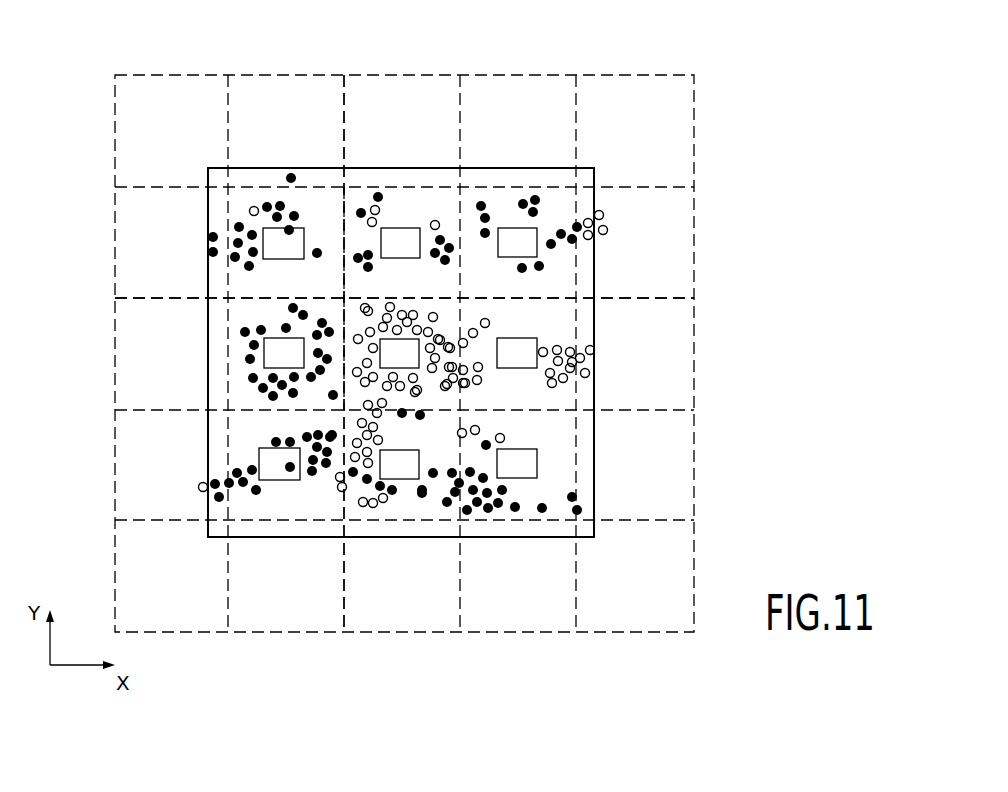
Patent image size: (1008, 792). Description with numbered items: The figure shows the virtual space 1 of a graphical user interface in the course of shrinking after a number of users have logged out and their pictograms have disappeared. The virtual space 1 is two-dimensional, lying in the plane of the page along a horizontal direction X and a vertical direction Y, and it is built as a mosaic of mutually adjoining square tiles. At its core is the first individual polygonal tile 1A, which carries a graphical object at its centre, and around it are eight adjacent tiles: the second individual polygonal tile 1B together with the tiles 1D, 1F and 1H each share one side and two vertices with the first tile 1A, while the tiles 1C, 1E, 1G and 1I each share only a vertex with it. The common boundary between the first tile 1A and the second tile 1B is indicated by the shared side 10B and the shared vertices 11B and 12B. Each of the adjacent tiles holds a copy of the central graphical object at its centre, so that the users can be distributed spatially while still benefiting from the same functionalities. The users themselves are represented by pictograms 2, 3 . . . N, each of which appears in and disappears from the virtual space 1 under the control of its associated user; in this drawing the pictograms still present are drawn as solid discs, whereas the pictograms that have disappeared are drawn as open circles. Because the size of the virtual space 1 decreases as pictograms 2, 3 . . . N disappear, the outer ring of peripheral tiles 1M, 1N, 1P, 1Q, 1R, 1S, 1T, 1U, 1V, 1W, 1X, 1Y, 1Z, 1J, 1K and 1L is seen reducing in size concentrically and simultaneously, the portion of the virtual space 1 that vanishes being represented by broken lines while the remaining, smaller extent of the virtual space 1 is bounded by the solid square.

The virtual space 1 is at (534, 162).
The pictogram 2 is at (542, 513).
The pictogram 3 is at (538, 199).
The pictogram N is at (218, 232).
The side 10B is at (362, 305).
The vertex 11B is at (343, 299).
The vertex 12B is at (460, 298).
The first individual polygonal tile 1A is at (449, 325).
The second individual polygonal tile 1B is at (417, 203).
The adjacent tile 1C is at (307, 203).
The adjacent tile 1D is at (247, 322).
The adjacent tile 1E is at (247, 435).
The adjacent tile 1F is at (405, 508).
The adjacent tile 1G is at (560, 468).
The adjacent tile 1H is at (563, 395).
The adjacent tile 1I is at (560, 273).
The peripheral tile 1J is at (487, 177).
The peripheral tile 1K is at (365, 178).
The peripheral tile 1L is at (257, 177).
The peripheral tile 1M is at (215, 178).
The peripheral tile 1N is at (218, 213).
The peripheral tile 1P is at (218, 310).
The peripheral tile 1Q is at (218, 422).
The peripheral tile 1R is at (218, 530).
The peripheral tile 1S is at (287, 527).
The peripheral tile 1T is at (427, 527).
The peripheral tile 1U is at (557, 530).
The peripheral tile 1V is at (587, 530).
The peripheral tile 1W is at (585, 445).
The peripheral tile 1X is at (588, 333).
The peripheral tile 1Y is at (580, 253).
The peripheral tile 1Z is at (576, 178).